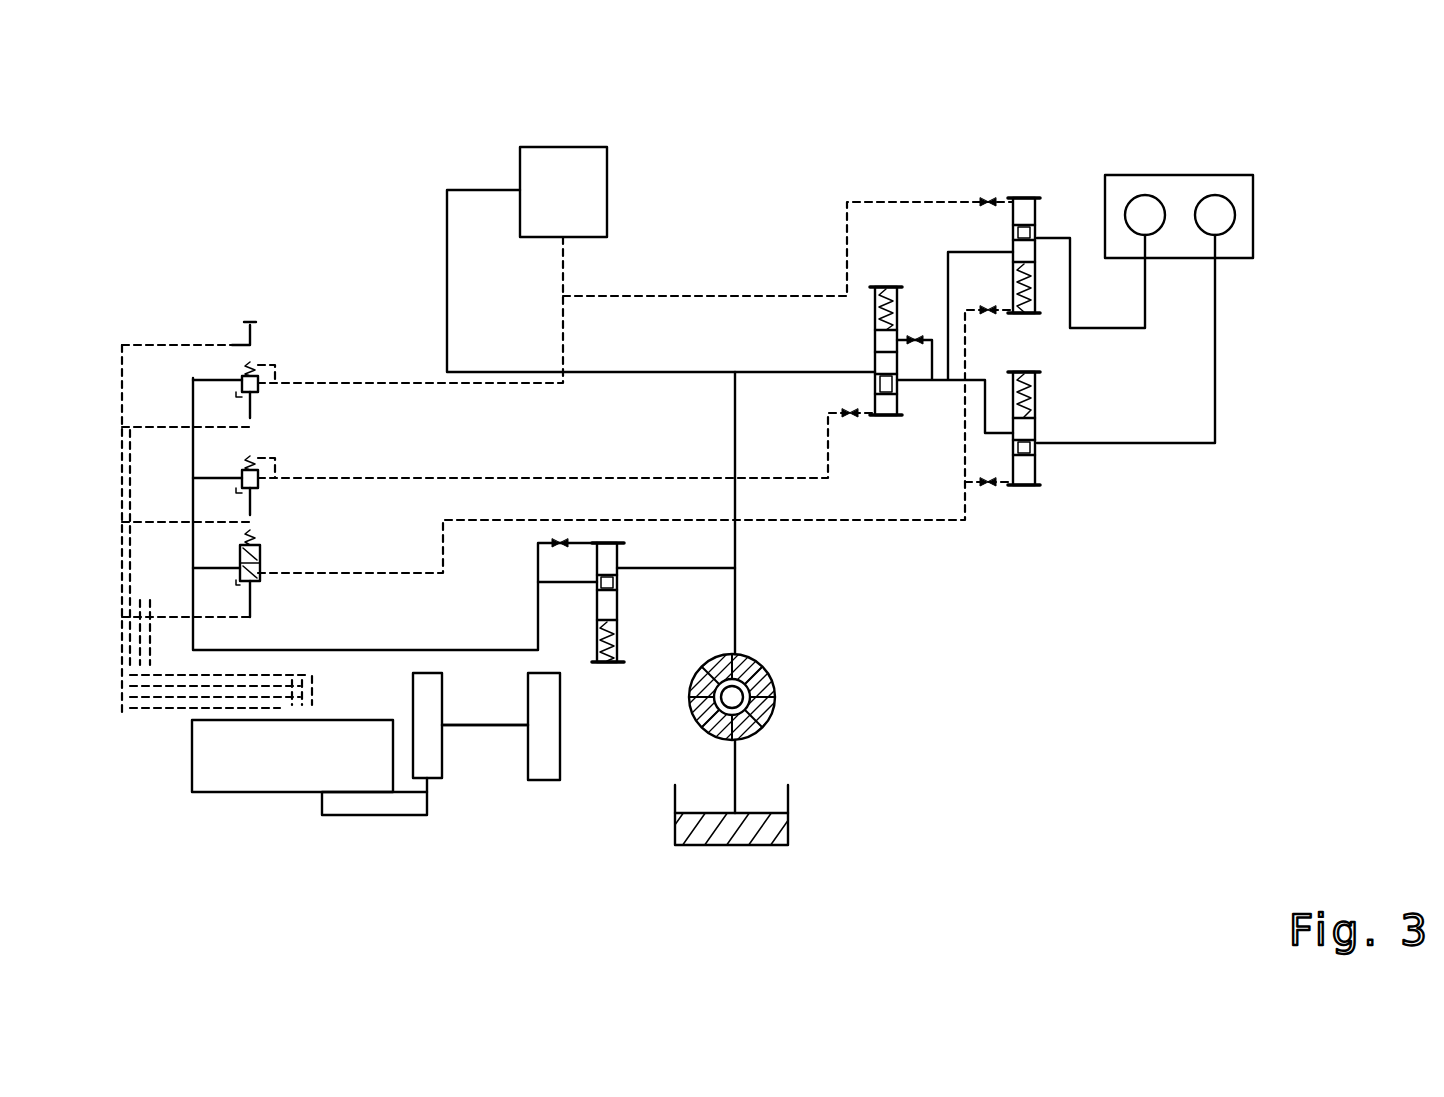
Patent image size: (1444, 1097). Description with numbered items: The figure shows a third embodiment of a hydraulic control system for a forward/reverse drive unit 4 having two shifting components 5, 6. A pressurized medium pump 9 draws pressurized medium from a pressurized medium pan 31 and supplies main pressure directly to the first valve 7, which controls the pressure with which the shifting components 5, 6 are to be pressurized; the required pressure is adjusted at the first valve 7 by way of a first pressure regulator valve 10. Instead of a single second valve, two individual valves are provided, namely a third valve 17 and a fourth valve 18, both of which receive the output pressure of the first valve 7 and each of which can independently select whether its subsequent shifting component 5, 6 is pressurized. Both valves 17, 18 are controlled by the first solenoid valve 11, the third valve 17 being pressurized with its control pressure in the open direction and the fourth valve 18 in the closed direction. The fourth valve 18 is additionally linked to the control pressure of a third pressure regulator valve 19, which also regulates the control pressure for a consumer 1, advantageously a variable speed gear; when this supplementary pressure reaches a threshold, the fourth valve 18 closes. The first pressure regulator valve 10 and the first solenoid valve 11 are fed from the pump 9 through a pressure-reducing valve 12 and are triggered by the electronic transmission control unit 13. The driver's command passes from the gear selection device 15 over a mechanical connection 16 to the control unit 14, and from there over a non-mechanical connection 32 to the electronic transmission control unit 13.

The consumer 1 is at (560, 192).
The forward/reverse drive unit 4 is at (1243, 192).
The shifting component 5 is at (1147, 220).
The shifting component 6 is at (1217, 220).
The first valve 7 is at (875, 300).
The pressurized medium pump 9 is at (768, 717).
The first pressure regulator valve 10 is at (258, 473).
The first solenoid valve 11 is at (258, 557).
The pressure-reducing valve 12 is at (613, 665).
The electronic transmission control unit 13 is at (237, 772).
The control unit 14 is at (430, 768).
The gear selection device 15 is at (550, 762).
The mechanical connection 16 is at (483, 727).
The third valve 17 is at (1031, 481).
The fourth valve 18 is at (1012, 233).
The third pressure regulator valve 19 is at (243, 380).
The pressurized medium pan 31 is at (760, 837).
The non-mechanical connection 32 is at (350, 817).